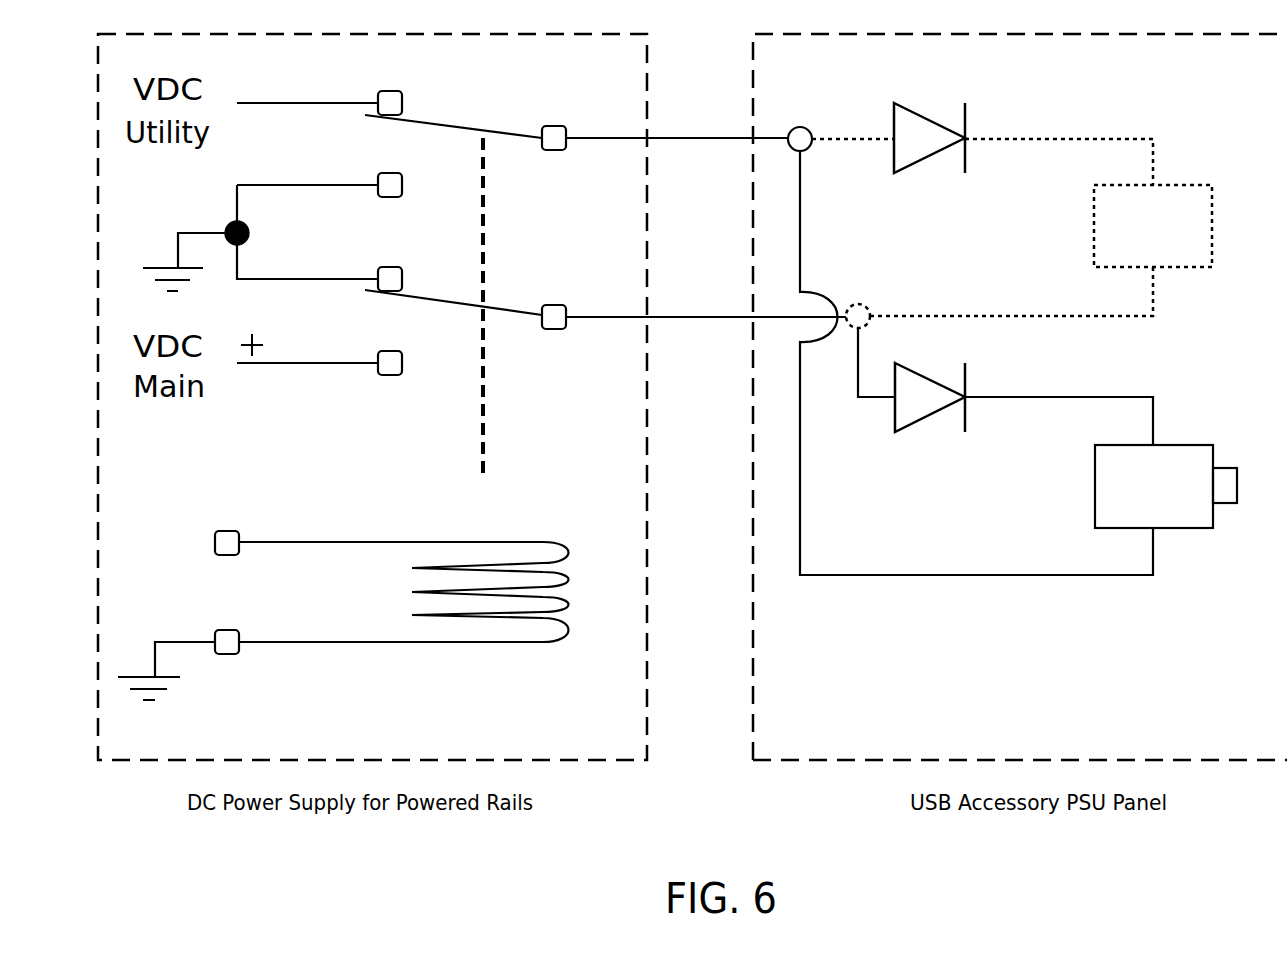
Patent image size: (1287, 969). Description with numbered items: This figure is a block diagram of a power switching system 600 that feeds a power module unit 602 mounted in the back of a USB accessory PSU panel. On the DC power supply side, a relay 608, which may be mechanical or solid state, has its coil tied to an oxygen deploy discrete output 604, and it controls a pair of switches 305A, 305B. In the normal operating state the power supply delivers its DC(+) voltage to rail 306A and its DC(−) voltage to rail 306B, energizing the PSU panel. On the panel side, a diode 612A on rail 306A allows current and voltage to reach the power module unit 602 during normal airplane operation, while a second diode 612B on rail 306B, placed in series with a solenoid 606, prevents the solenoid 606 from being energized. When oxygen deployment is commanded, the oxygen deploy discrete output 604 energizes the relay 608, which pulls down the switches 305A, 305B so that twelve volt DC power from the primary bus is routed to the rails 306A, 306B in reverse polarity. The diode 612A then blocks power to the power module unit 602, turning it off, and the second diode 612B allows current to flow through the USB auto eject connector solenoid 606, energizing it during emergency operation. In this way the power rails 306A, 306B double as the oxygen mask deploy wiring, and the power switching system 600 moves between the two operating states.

The power switching system 600 is at (652, 814).
The switch 305A is at (455, 126).
The switch 305B is at (507, 310).
The rail 306A is at (650, 137).
The rail 306B is at (633, 315).
The power module unit 602 is at (1192, 185).
The oxygen deploy discrete output 604 is at (238, 532).
The solenoid 606 is at (1180, 445).
The relay 608 is at (545, 542).
The diode 612A is at (924, 117).
The second diode 612B is at (913, 372).